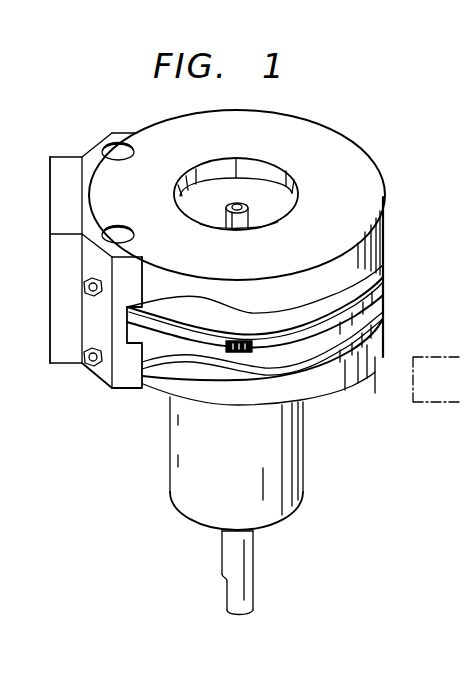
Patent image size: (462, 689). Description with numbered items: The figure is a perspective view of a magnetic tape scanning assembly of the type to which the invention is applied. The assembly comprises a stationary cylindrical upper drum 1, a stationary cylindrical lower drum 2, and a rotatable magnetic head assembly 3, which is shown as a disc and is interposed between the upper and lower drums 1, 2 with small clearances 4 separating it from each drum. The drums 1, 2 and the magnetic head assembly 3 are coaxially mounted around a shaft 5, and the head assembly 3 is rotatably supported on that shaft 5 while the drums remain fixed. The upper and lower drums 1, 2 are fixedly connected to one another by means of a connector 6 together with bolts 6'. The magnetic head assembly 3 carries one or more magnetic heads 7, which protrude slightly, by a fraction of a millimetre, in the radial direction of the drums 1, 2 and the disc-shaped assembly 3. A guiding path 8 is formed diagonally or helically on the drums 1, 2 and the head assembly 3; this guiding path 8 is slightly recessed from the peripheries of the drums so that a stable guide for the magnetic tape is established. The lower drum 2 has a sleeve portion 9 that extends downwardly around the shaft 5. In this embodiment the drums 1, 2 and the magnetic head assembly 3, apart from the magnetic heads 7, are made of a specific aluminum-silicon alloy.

The upper drum 1 is at (325, 138).
The lower drum 2 is at (318, 382).
The magnetic head assembly 3 is at (378, 297).
The clearances 4 is at (328, 310).
The shaft 5 is at (230, 555).
The connector 6 is at (94, 240).
The bolts 6' is at (70, 349).
The magnetic heads 7 is at (243, 353).
The guiding path 8 is at (245, 318).
The sleeve portion 9 is at (183, 440).